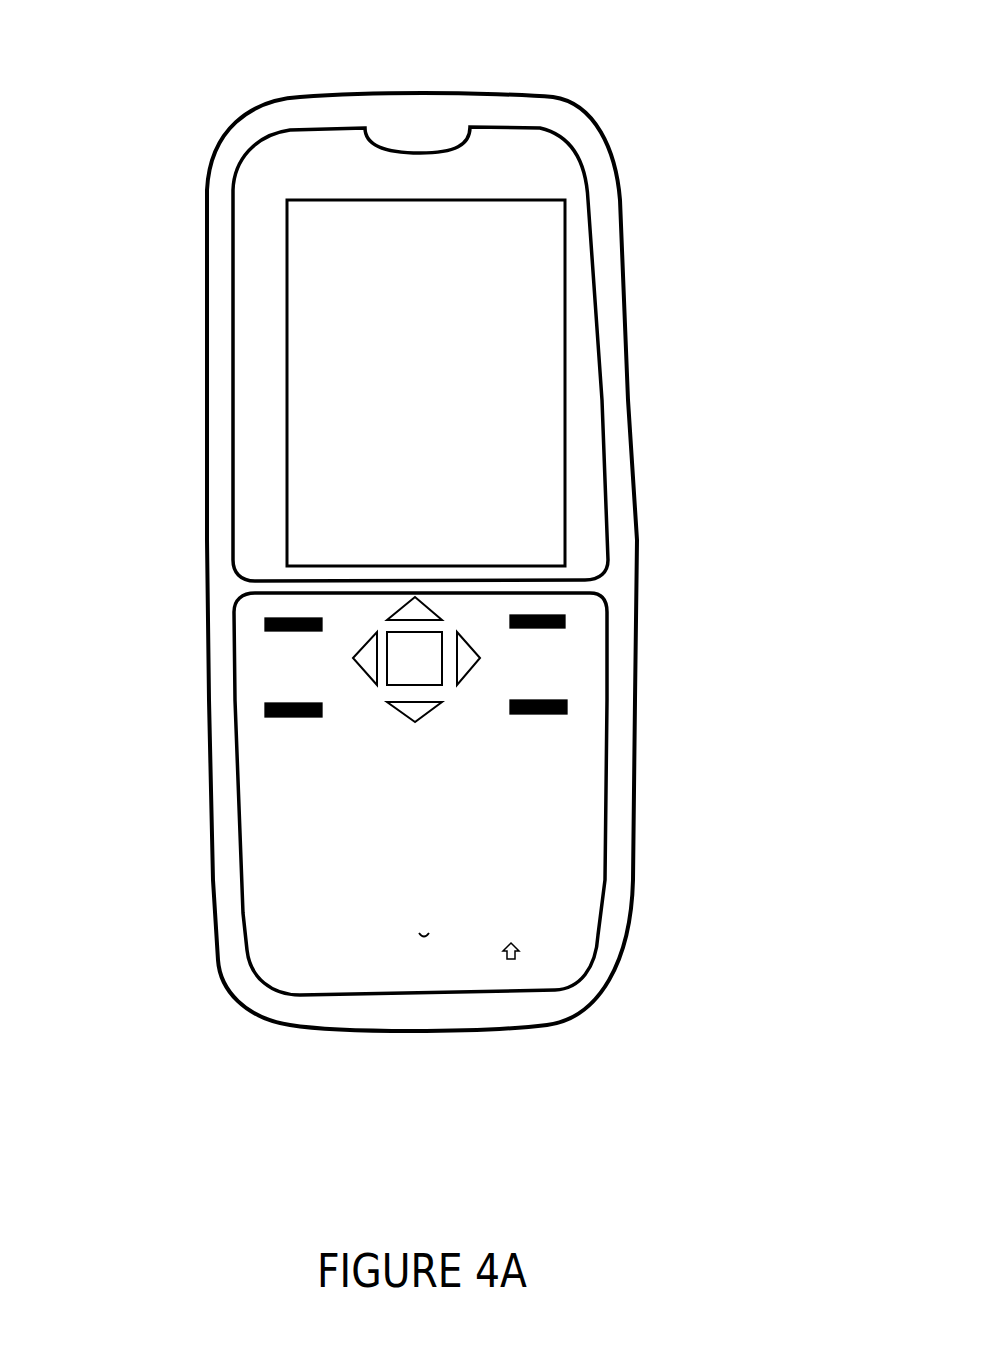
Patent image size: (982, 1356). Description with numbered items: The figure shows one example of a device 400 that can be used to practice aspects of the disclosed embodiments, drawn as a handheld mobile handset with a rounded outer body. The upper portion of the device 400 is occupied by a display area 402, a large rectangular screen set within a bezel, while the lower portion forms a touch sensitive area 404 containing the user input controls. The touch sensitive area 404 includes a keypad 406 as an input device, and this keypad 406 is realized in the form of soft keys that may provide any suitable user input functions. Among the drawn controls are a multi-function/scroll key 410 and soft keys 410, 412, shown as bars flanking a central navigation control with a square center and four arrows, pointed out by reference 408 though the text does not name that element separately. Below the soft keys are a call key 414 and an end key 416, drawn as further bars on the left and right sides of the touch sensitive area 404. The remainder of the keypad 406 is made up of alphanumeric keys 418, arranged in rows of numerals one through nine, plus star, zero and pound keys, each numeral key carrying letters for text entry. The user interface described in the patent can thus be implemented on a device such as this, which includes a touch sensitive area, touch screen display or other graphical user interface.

The device 400 is at (520, 67).
The display area 402 is at (540, 308).
The touch sensitive area 404 is at (547, 777).
The keypad 406 is at (546, 900).
The navigation key 408 is at (495, 648).
The soft key 410 is at (229, 608).
The soft key 412 is at (584, 604).
The call key 414 is at (227, 701).
The end key 416 is at (585, 714).
The alphanumeric keys 418 is at (434, 911).